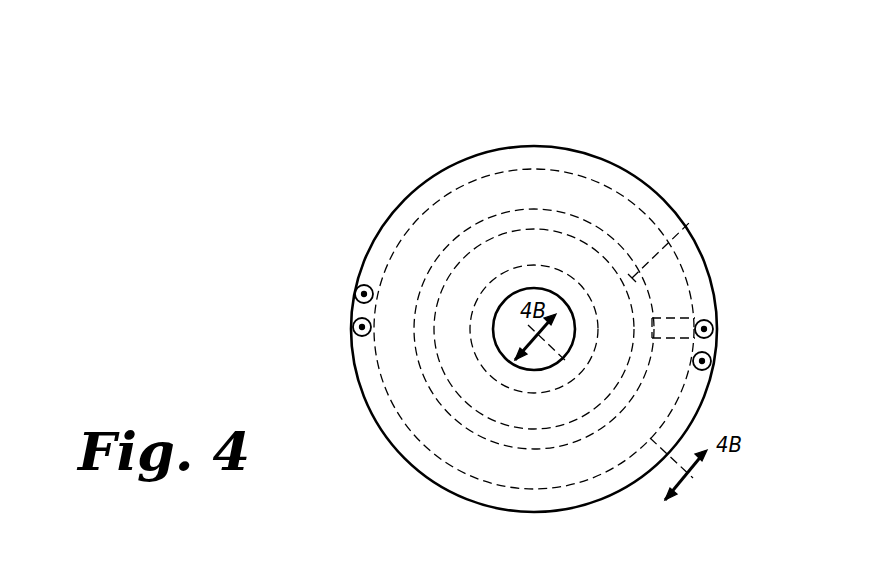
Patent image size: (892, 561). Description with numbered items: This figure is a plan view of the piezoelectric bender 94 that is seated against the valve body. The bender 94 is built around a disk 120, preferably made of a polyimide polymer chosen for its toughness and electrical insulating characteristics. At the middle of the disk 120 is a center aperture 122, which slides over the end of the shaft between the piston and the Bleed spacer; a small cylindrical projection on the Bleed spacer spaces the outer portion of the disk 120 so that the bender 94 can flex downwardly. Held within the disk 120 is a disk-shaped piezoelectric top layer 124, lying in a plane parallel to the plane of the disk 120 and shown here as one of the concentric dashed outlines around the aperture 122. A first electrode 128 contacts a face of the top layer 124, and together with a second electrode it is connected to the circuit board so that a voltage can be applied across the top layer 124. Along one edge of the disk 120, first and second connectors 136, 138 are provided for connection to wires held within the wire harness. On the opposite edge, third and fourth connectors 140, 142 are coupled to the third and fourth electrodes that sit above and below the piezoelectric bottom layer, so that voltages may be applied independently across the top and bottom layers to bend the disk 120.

The bender 94 is at (618, 163).
The disk 120 is at (652, 205).
The center aperture 122 is at (499, 351).
The piezoelectric top layer 124 is at (507, 193).
The first electrode 128 is at (690, 222).
The first connector 136 is at (713, 329).
The second connector 138 is at (709, 364).
The third connector 140 is at (356, 294).
The fourth connector 142 is at (354, 328).